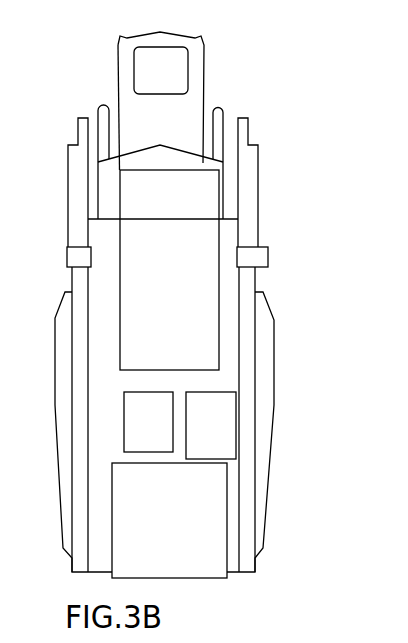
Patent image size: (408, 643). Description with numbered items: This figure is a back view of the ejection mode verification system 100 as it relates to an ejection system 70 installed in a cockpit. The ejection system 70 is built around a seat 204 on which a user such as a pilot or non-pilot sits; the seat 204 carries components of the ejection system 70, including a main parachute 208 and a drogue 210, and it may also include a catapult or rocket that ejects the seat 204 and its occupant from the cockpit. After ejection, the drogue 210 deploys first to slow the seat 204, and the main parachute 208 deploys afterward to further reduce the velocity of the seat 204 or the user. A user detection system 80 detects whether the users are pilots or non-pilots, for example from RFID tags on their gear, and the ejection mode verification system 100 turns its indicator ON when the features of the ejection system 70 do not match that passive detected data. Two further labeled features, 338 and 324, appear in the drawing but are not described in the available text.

The ejection mode verification system 100 is at (275, 139).
The ejection system 70 is at (307, 176).
The drogue 210 is at (219, 203).
The seat 204 is at (295, 299).
The user detection system 80 is at (329, 334).
The main parachute 208 is at (219, 340).
The left cavity 338 is at (135, 413).
The right cavity 324 is at (217, 427).